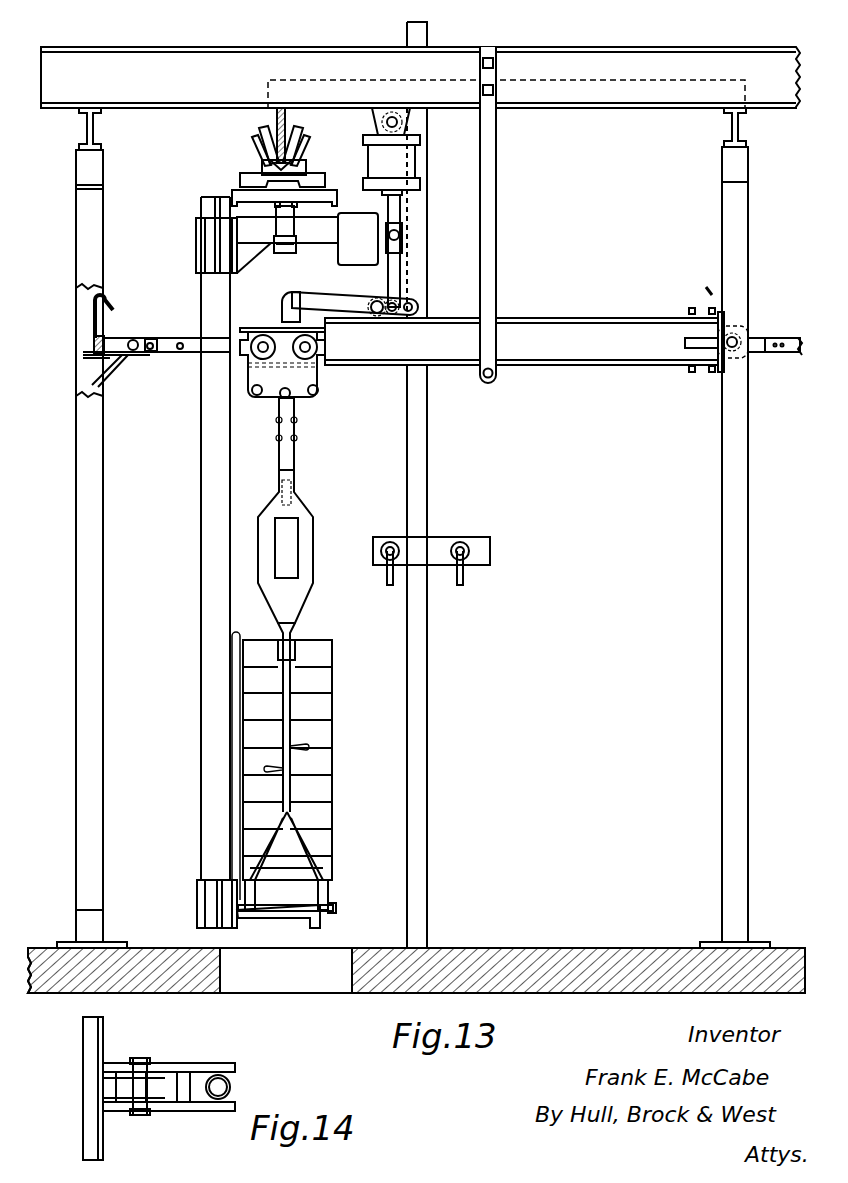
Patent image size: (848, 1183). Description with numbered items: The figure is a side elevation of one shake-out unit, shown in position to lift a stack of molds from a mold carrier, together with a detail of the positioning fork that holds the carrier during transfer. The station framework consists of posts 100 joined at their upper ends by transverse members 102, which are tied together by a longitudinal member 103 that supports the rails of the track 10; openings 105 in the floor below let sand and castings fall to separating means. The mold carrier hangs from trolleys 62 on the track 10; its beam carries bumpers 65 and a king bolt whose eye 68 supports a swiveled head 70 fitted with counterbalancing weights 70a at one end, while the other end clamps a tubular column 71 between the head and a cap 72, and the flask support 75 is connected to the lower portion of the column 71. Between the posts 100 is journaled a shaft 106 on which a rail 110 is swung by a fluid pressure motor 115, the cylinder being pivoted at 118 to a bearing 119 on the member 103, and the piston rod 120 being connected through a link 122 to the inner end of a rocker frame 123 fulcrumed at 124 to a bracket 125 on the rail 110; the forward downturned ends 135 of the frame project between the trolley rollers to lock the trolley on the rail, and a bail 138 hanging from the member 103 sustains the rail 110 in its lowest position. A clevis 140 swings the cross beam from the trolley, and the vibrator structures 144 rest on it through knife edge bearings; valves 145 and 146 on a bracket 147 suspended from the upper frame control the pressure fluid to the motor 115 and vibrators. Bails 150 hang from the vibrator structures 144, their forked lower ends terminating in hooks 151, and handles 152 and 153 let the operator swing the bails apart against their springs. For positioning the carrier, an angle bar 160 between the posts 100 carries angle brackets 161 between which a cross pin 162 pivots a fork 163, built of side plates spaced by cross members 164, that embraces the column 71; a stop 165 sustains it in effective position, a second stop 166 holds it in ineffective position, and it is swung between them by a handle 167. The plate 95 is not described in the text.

In FIG. 13, the track 10 is at (503, 116).
In FIG. 13, the trolleys 62 is at (280, 146).
In FIG. 13, the bumpers 65 is at (268, 177).
In FIG. 13, the eye 68 is at (270, 229).
In FIG. 13, the head 70 is at (287, 245).
In FIG. 13, the counterbalancing weights 70a is at (358, 239).
In FIG. 13, the tubular column 71 is at (202, 600).
In FIG. 14, the tubular column 71 is at (235, 1083).
In FIG. 13, the cap 72 is at (198, 235).
In FIG. 13, the mold or flask support 75 is at (345, 894).
In FIG. 13, the plate 95 is at (292, 186).
In FIG. 13, the posts 100 is at (422, 547).
In FIG. 13, the transverse members 102 is at (412, 129).
In FIG. 13, the longitudinal member 103 is at (420, 68).
In FIG. 13, the openings 105 is at (416, 949).
In FIG. 13, the shafts 106 is at (737, 327).
In FIG. 13, the rail 110 is at (524, 329).
In FIG. 13, the fluid pressure motor 115 is at (415, 165).
In FIG. 13, the pivotal connection 118 is at (419, 121).
In FIG. 13, the bearing 119 is at (351, 119).
In FIG. 13, the piston rod 120 is at (427, 251).
In FIG. 13, the link 122 is at (426, 249).
In FIG. 13, the rocker frame 123 is at (355, 292).
In FIG. 13, the fulcrum 124 is at (366, 321).
In FIG. 13, the bracket 125 is at (391, 329).
In FIG. 13, the downturned ends 135 is at (270, 307).
In FIG. 13, the bail 138 is at (509, 215).
In FIG. 13, the clevis 140 is at (287, 399).
In FIG. 13, the vibrator structures 144 is at (305, 641).
In FIG. 13, the valve 145 is at (431, 572).
In FIG. 13, the valve 146 is at (459, 574).
In FIG. 13, the bracket 147 is at (441, 485).
In FIG. 13, the bails 150 is at (311, 760).
In FIG. 13, the hooks 151 is at (285, 870).
In FIG. 13, the handle 152 is at (332, 749).
In FIG. 13, the handle 153 is at (221, 769).
In FIG. 13, the angle bar 160 is at (78, 334).
In FIG. 14, the angle bar 160 is at (72, 1088).
In FIG. 13, the angle brackets 161 is at (137, 316).
In FIG. 14, the angle brackets 161 is at (135, 1083).
In FIG. 13, the cross pin 162 is at (129, 332).
In FIG. 14, the cross pin 162 is at (157, 1072).
In FIG. 13, the fork 163 is at (452, 347).
In FIG. 14, the fork 163 is at (169, 1075).
In FIG. 13, the cross members 164 is at (165, 338).
In FIG. 14, the cross members 164 is at (206, 1101).
In FIG. 13, the stop 165 is at (134, 363).
In FIG. 14, the stop 165 is at (103, 1084).
In FIG. 13, the second stop 166 is at (122, 308).
In FIG. 13, the handle 167 is at (121, 375).
In FIG. 14, the handle 167 is at (68, 1115).